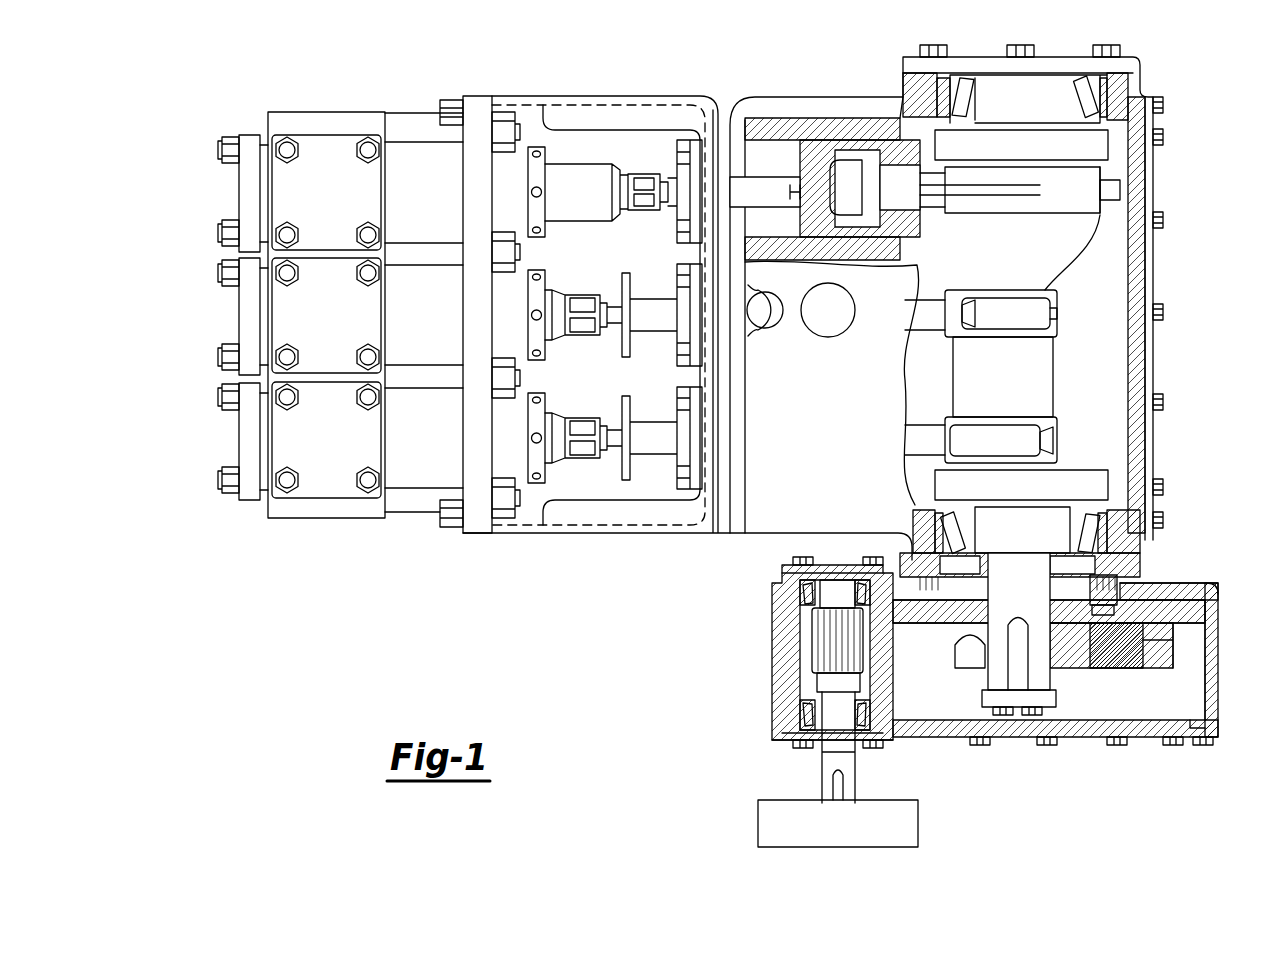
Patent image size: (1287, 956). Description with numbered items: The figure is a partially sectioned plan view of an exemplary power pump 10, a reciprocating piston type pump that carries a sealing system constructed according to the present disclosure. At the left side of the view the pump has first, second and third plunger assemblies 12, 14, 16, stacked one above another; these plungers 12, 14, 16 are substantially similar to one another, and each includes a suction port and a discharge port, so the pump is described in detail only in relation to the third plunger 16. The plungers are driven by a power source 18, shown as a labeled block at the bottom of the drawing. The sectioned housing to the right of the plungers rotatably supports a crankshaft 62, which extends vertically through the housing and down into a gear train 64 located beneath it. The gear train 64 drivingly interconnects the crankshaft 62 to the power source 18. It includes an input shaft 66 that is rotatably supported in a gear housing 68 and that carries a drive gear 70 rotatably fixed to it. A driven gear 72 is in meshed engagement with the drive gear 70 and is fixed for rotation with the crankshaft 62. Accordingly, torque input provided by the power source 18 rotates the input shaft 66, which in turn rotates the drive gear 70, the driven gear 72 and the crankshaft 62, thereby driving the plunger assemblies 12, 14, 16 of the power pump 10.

The power pump 10 is at (1182, 74).
The first plunger assembly 12 is at (238, 126).
The second plunger assembly 14 is at (210, 301).
The third plunger assembly 16 is at (228, 455).
The power source 18 is at (760, 836).
The crankshaft 62 is at (1038, 645).
The gear train 64 is at (1183, 618).
The input shaft 66 is at (822, 766).
The gear housing 68 is at (790, 597).
The drive gear 70 is at (812, 645).
The driven gear 72 is at (1160, 680).